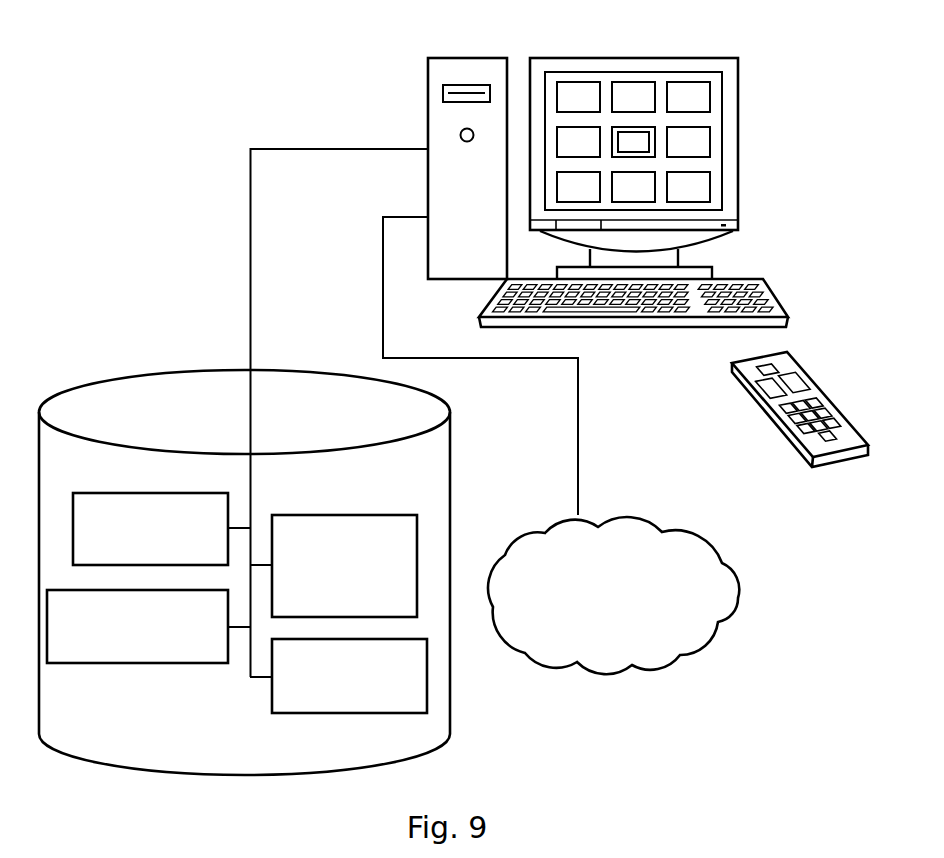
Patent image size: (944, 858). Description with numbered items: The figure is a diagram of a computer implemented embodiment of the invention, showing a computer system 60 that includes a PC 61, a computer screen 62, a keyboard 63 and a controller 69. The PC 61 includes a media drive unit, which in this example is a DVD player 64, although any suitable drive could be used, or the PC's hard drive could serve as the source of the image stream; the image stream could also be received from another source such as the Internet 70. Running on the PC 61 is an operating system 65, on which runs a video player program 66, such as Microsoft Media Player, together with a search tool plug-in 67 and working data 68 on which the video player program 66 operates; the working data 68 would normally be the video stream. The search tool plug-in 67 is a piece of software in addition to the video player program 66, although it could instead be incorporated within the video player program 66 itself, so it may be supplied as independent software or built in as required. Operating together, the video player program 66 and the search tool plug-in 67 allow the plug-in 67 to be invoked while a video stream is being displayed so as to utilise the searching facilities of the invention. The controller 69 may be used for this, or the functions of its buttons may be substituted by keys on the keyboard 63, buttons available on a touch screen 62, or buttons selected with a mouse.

The computer system 60 is at (211, 84).
The PC 61 is at (442, 141).
The computer screen 62 is at (728, 146).
The keyboard 63 is at (770, 293).
The DVD player 64 is at (466, 86).
The operating system 65 is at (88, 493).
The video player program 66 is at (345, 515).
The search tool plug-in 67 is at (137, 663).
The working data 68 is at (322, 713).
The controller 69 is at (758, 412).
The Internet 70 is at (745, 598).